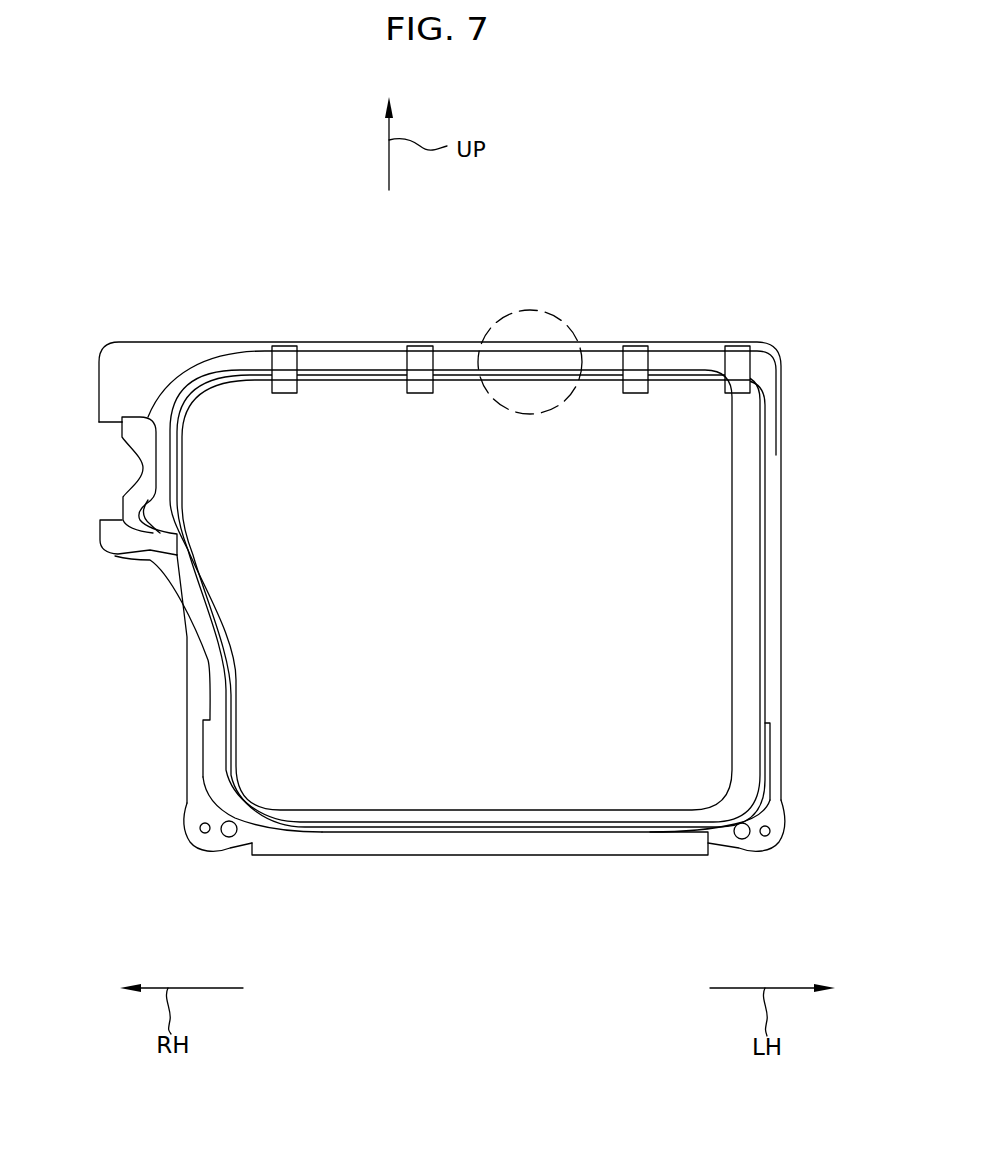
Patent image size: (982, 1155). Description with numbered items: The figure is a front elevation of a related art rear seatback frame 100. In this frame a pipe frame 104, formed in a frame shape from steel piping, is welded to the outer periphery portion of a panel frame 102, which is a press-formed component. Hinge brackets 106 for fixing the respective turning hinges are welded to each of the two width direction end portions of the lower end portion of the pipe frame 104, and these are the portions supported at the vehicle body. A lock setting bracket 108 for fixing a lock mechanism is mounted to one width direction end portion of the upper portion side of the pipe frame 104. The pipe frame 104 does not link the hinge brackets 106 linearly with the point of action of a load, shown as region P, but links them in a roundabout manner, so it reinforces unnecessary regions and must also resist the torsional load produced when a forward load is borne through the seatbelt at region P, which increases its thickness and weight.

The rear seatback frame 100 is at (718, 286).
The panel frame 102 is at (781, 540).
The pipe frame 104 is at (490, 810).
The hinge bracket 106 is at (192, 840).
The lock setting bracket 108 is at (130, 453).
The region P is at (534, 312).